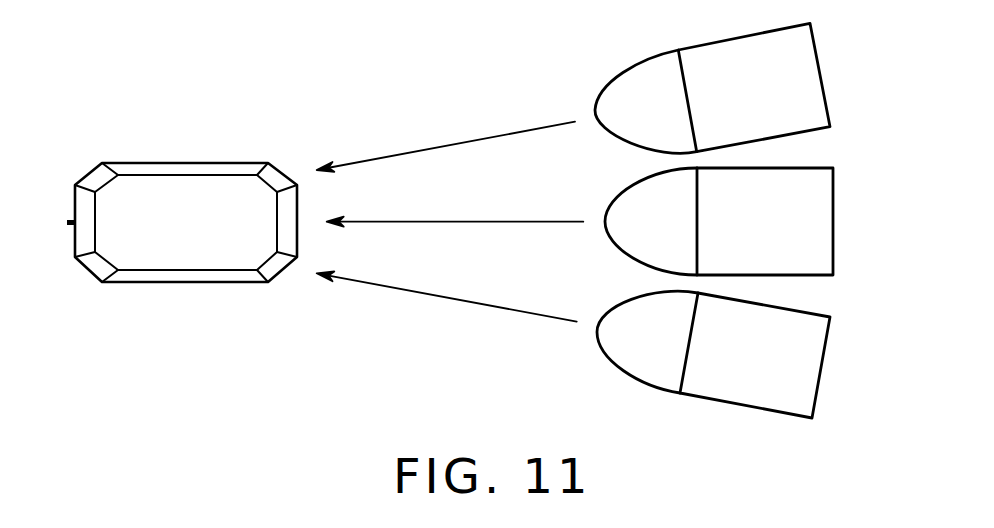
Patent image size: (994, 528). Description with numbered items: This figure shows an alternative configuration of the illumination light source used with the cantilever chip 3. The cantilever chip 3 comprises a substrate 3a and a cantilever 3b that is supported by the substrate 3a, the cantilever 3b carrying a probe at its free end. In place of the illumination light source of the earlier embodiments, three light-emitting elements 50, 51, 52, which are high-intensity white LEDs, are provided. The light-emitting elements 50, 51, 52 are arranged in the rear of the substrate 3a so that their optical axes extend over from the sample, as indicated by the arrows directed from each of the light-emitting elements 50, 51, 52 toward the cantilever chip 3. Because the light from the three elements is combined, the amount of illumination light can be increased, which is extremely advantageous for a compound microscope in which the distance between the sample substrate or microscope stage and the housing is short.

The cantilever chip 3 is at (171, 304).
The substrate 3a is at (185, 185).
The cantilever 3b is at (71, 221).
The light-emitting element 50 is at (820, 72).
The light-emitting element 51 is at (835, 221).
The light-emitting element 52 is at (825, 368).